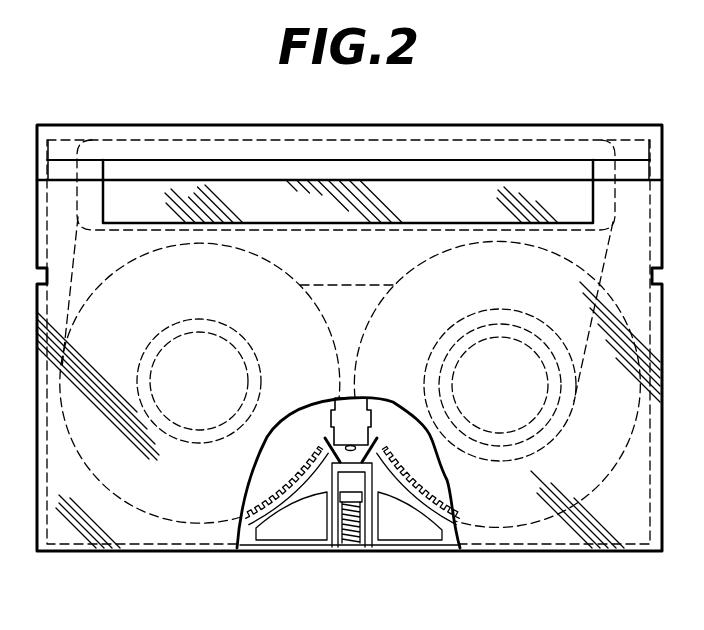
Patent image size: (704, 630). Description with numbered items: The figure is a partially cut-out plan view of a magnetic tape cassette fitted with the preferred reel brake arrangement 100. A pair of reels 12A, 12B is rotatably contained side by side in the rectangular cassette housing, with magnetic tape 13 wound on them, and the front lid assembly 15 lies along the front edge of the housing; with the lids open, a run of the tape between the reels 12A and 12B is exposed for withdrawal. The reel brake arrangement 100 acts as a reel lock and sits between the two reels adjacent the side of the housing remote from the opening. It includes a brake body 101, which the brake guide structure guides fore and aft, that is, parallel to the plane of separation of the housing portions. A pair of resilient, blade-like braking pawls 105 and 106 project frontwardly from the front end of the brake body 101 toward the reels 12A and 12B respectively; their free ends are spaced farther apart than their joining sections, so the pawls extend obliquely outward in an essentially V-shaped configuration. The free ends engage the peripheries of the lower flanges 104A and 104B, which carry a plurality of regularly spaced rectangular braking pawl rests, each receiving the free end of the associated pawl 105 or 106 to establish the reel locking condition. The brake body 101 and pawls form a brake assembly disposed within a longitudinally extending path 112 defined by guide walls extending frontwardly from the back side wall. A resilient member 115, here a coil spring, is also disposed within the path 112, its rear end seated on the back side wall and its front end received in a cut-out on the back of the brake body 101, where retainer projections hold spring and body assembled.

The magnetic tape 13 is at (512, 142).
The front lid assembly 15 is at (187, 150).
The reel 12A is at (525, 330).
The reel 12B is at (152, 342).
The reel brake arrangement 100 is at (386, 516).
The lower flange 104A is at (393, 413).
The lower flange 104B is at (297, 425).
The brake body 101 is at (340, 485).
The braking pawl 105 is at (372, 442).
The braking pawl 106 is at (325, 443).
The longitudinally extending path 112 is at (322, 542).
The resilient member 115 is at (358, 544).